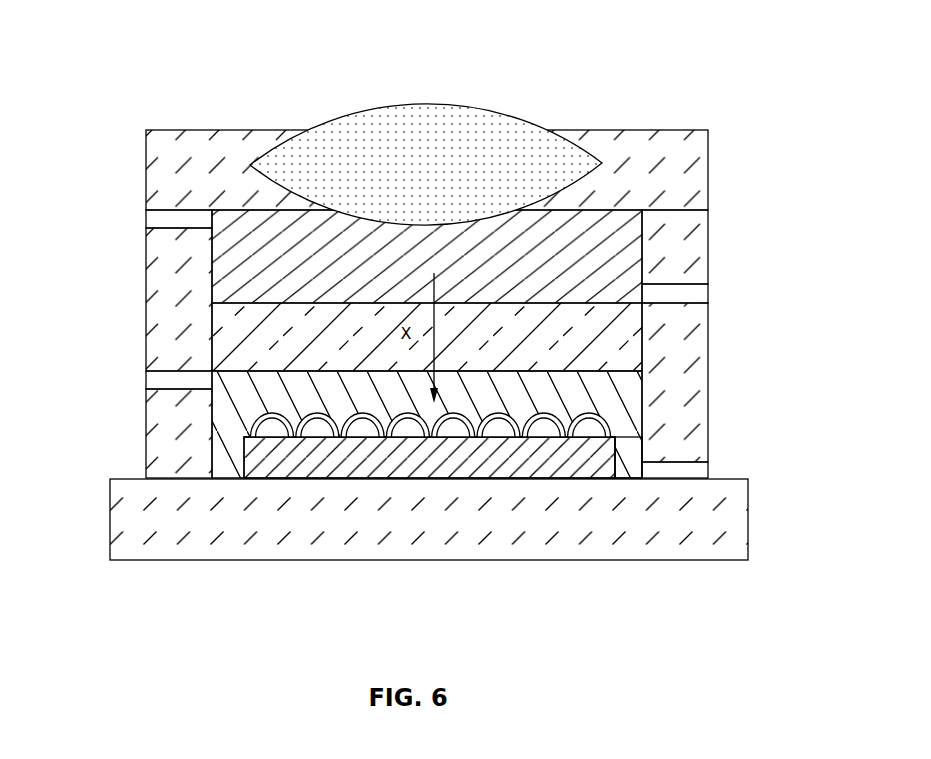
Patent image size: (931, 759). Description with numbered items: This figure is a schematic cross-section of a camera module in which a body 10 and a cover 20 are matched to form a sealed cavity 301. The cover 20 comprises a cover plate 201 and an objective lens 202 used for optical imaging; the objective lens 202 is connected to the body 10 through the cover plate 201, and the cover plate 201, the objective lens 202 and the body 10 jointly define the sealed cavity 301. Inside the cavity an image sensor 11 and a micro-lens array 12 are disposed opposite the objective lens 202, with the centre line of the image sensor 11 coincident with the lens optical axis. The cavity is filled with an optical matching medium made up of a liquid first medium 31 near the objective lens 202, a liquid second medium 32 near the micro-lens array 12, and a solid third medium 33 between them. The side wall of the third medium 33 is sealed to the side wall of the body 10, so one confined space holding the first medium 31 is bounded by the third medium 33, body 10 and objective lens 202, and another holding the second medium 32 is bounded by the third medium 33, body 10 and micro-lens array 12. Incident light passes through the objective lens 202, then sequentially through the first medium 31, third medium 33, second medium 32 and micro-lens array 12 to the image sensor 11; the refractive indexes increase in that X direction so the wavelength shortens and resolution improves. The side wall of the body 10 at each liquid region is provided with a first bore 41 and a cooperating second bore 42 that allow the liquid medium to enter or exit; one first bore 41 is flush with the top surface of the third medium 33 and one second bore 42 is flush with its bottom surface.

The body 10 is at (278, 500).
The image sensor 11 is at (344, 458).
The micro-lens array 12 is at (415, 436).
The cover 20 is at (207, 67).
The cover plate 201 is at (240, 173).
The objective lens 202 is at (353, 167).
The sealed cavity 301 is at (531, 267).
The first medium 31 is at (455, 282).
The second medium 32 is at (537, 393).
The third medium 33 is at (612, 437).
The first bore 41 is at (678, 296).
The second bore 42 is at (182, 217).